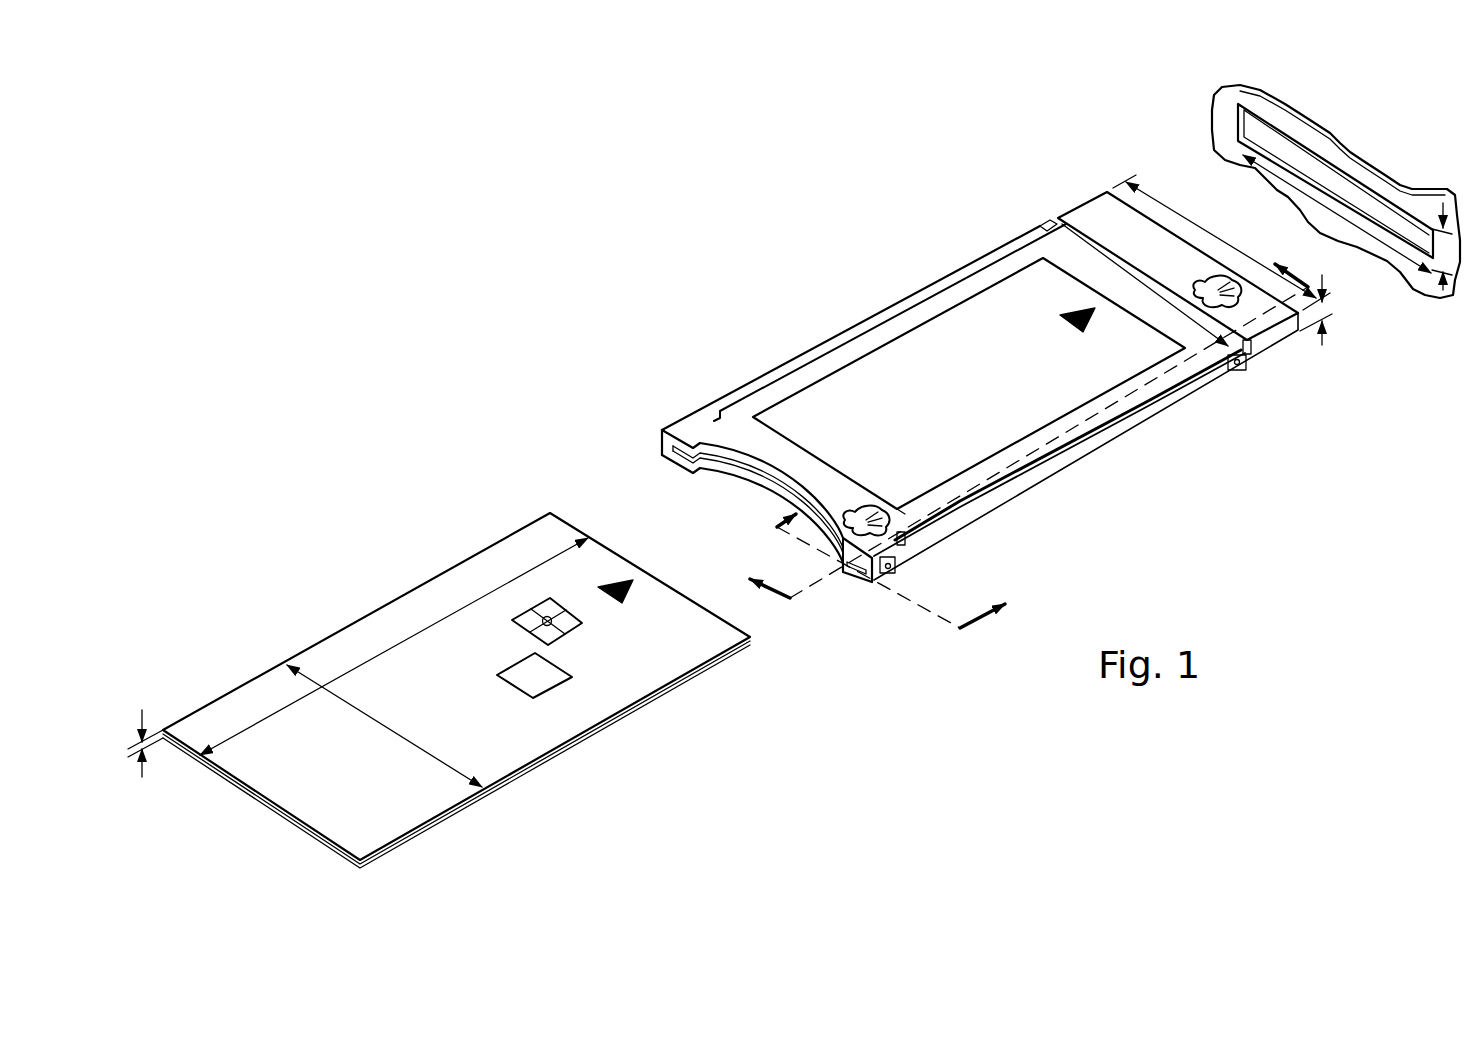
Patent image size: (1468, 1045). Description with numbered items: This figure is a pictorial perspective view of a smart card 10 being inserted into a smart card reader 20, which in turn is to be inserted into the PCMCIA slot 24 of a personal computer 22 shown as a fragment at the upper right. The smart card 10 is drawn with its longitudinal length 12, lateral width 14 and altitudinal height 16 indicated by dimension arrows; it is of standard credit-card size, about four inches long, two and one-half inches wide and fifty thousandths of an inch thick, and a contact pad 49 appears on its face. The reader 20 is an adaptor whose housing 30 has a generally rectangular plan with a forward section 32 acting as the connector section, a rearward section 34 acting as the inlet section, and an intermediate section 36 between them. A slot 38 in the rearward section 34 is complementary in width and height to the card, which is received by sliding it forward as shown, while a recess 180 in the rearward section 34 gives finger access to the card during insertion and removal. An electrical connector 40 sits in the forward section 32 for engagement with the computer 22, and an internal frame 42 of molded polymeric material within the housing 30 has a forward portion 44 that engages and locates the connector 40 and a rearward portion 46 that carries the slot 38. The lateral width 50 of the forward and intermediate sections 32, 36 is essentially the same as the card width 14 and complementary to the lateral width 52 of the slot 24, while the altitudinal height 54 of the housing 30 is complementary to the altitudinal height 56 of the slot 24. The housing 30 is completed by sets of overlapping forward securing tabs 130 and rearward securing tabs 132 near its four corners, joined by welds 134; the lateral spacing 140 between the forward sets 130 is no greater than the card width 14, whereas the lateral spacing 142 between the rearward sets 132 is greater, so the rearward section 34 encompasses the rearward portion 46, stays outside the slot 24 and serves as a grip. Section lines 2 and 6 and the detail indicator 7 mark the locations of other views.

The smart card 10 is at (262, 670).
The longitudinal length 12 is at (483, 599).
The lateral width 14 is at (393, 733).
The altitudinal height 16 is at (142, 710).
The smart card reader 20 is at (850, 325).
The personal computer 22 is at (1223, 92).
The PCMCIA slot 24 is at (1298, 122).
The housing 30 is at (1006, 467).
The forward section 32 is at (1100, 210).
The rearward section 34 is at (696, 412).
The intermediate section 36 is at (903, 358).
The slot 38 is at (728, 477).
The electrical connector 40 is at (1208, 284).
The internal frame 42 is at (864, 520).
The forward portion 44 is at (1270, 340).
The rearward portion 46 is at (662, 445).
The contact pad 49 is at (510, 677).
The lateral width 50 is at (1160, 205).
The lateral width 52 is at (1333, 208).
The altitudinal height 54 is at (1324, 342).
The altitudinal height 56 is at (1442, 212).
The sets of complementary overlapping forward securing tabs 130 is at (1035, 227).
The sets of complementary overlapping rearward securing tabs 132 is at (664, 428).
The welds 134 is at (1238, 370).
The lateral spacing 140 is at (1083, 255).
The lateral spacing 142 is at (787, 443).
The recess 180 is at (765, 472).
The section line 2- 2 is at (1021, 416).
The section line 6- 6 is at (897, 560).
The detail 7 is at (847, 587).